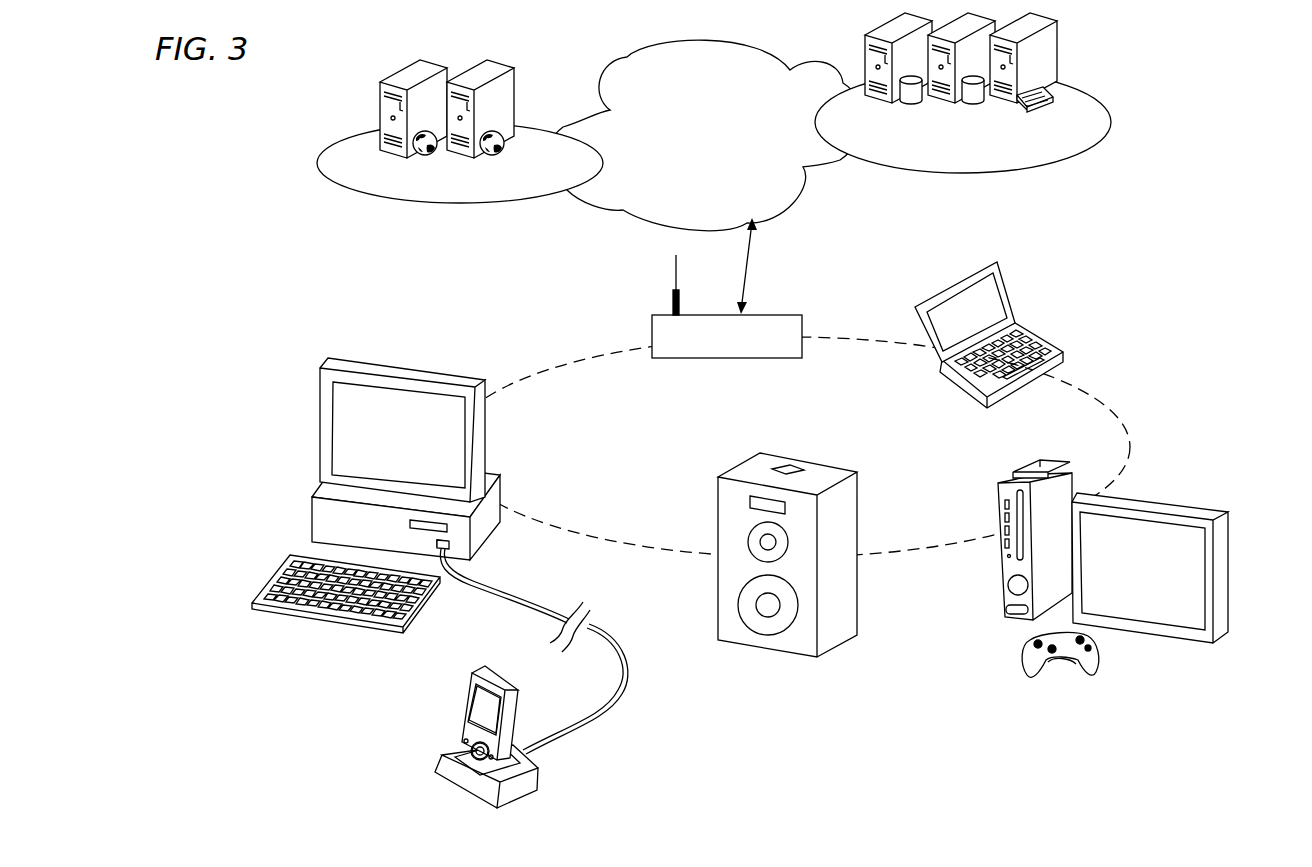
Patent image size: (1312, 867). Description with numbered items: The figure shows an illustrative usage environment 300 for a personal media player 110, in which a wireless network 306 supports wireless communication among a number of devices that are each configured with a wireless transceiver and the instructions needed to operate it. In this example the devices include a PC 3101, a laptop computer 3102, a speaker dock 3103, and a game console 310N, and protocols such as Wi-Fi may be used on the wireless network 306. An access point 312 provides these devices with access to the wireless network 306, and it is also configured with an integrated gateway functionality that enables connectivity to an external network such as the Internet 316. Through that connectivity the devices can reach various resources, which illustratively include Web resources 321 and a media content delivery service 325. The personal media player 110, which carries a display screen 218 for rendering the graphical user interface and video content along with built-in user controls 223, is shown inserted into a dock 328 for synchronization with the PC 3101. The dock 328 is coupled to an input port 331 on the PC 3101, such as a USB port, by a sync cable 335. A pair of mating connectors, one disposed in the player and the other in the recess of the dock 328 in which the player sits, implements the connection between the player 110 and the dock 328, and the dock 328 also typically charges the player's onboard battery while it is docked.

The usage environment 300 is at (284, 291).
The Internet 316 is at (627, 57).
The Web resources 321 is at (330, 140).
The media content delivery service 325 is at (1015, 171).
The wireless network 306 is at (553, 363).
The access point 312 is at (790, 315).
The PC 3101 is at (312, 520).
The laptop computer 3102 is at (1005, 280).
The speaker dock 3103 is at (858, 496).
The game console 310N is at (1228, 541).
The input port 331 is at (455, 545).
The sync cable 335 is at (620, 676).
The dock 328 is at (540, 775).
The personal media player 110 is at (493, 670).
The display screen 218 is at (484, 712).
The user controls 223 is at (444, 740).